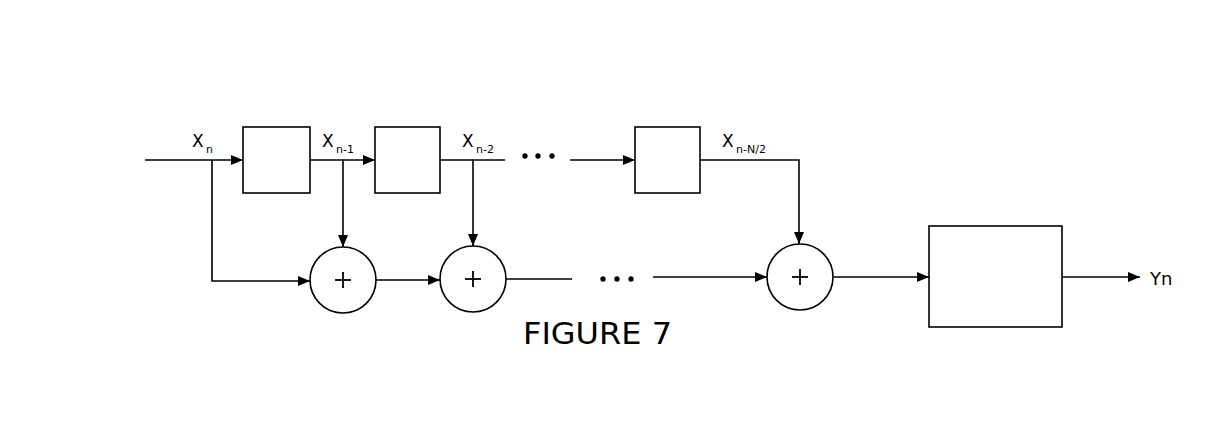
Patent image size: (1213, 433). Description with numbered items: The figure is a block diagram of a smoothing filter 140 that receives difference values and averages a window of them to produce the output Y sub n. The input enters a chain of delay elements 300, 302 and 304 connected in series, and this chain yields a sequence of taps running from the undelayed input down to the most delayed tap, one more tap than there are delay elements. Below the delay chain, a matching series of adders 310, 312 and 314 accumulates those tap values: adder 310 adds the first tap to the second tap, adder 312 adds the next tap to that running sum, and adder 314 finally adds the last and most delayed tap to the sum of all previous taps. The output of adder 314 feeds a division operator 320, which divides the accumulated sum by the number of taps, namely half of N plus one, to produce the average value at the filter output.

The smoothing filter 140 is at (880, 103).
The delay element 300 is at (276, 127).
The delay element 302 is at (408, 127).
The delay element 304 is at (668, 127).
The adder 310 is at (367, 254).
The adder 312 is at (491, 254).
The adder 314 is at (819, 249).
The division operator 320 is at (995, 276).